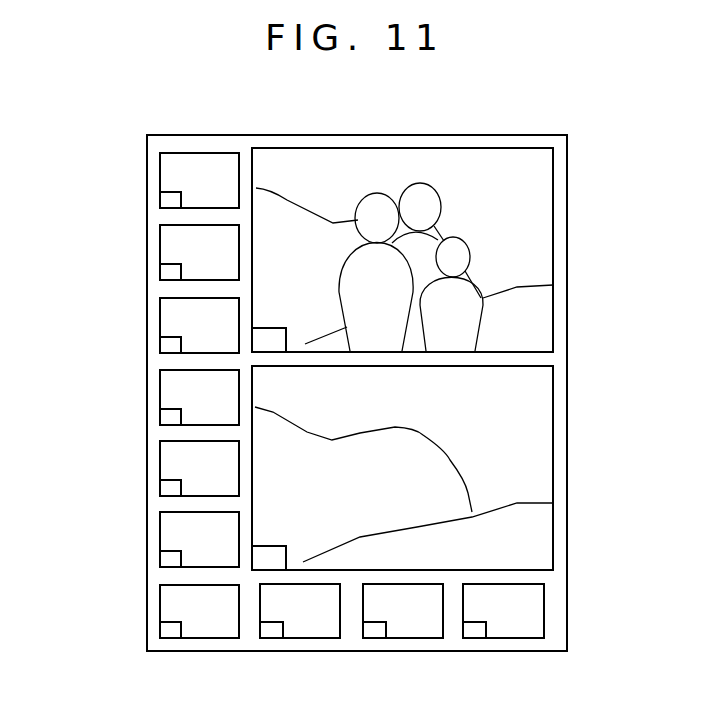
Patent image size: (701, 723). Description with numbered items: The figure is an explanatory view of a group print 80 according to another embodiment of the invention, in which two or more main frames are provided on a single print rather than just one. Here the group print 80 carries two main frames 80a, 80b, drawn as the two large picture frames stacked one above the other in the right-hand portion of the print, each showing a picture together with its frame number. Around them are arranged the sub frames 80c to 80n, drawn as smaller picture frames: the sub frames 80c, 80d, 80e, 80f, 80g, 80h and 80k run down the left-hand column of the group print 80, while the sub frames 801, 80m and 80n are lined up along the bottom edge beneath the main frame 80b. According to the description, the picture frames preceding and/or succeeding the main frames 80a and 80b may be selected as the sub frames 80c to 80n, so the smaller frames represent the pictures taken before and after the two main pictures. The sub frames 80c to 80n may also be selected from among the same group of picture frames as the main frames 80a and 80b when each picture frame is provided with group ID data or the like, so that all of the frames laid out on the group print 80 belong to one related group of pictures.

The group print 80 is at (378, 133).
The main frame 80a is at (548, 262).
The main frame 80b is at (548, 477).
The sub frame 80c is at (165, 173).
The sub frame 80d is at (165, 245).
The sub frame 80e is at (165, 318).
The sub frame 80f is at (165, 390).
The sub frame 80g is at (165, 461).
The sub frame 80h is at (165, 532).
The sub frame 80k is at (165, 605).
The sub frame 801 is at (295, 632).
The sub frame 80m is at (397, 633).
The sub frame 80n is at (498, 633).